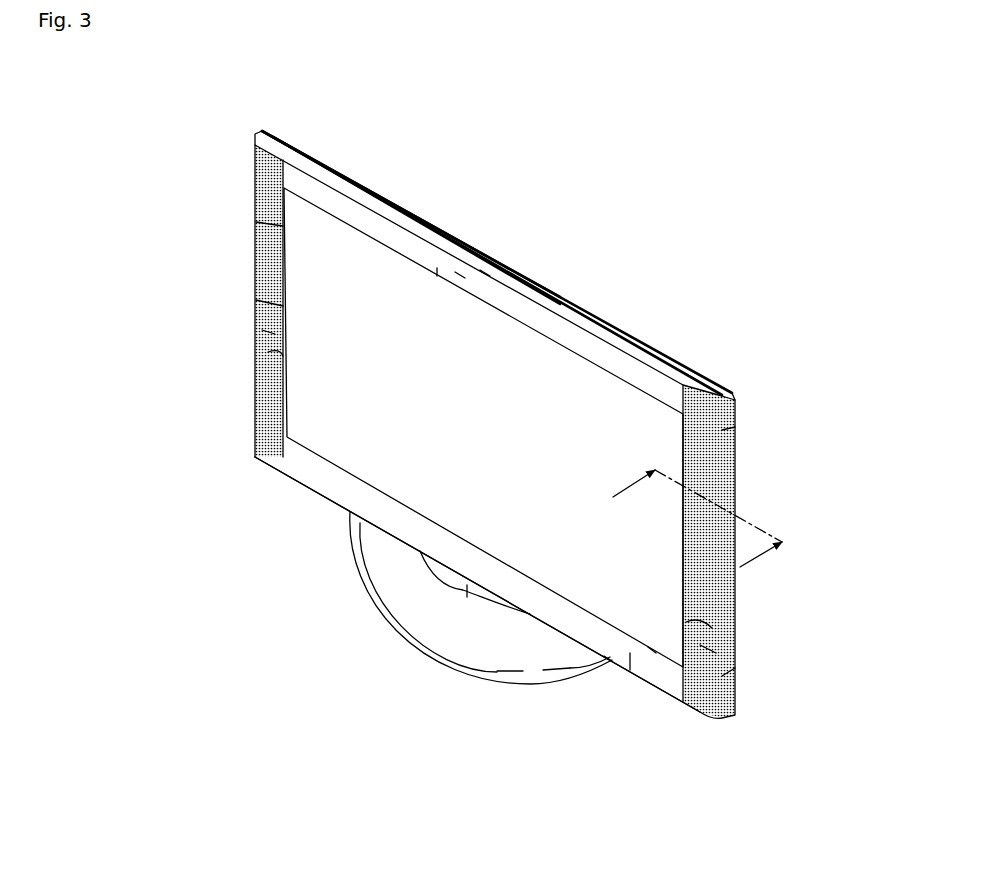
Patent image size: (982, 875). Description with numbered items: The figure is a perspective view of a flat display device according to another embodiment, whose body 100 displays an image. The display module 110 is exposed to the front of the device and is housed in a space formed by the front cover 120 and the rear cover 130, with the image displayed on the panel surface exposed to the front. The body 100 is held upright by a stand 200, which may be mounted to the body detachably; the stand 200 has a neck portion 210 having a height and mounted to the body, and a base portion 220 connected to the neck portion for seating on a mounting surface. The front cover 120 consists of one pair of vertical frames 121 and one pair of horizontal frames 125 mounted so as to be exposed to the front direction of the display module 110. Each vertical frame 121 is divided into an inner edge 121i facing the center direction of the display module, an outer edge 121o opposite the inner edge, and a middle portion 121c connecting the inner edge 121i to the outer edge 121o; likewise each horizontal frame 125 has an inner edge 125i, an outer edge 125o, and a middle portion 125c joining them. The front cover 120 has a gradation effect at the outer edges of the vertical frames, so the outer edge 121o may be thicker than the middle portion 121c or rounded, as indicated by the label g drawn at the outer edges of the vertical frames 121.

The body 100 is at (312, 155).
The display module 110 is at (358, 272).
The front cover 120 is at (553, 323).
The vertical frames 121 is at (137, 273).
The outer edge of vertical frame 121o is at (256, 305).
The middle portion of vertical frame 121c is at (268, 332).
The inner edge of vertical frame 121i is at (282, 355).
The horizontal frames 125 is at (592, 172).
The outer edge of horizontal frame 125o is at (485, 273).
The middle portion of horizontal frame 125c is at (460, 275).
The inner edge of horizontal frame 125i is at (652, 650).
The rear cover 130 is at (608, 323).
The stand 200 is at (474, 643).
The neck portion 210 is at (467, 587).
The base portion 220 is at (423, 600).
The gap g is at (256, 222).